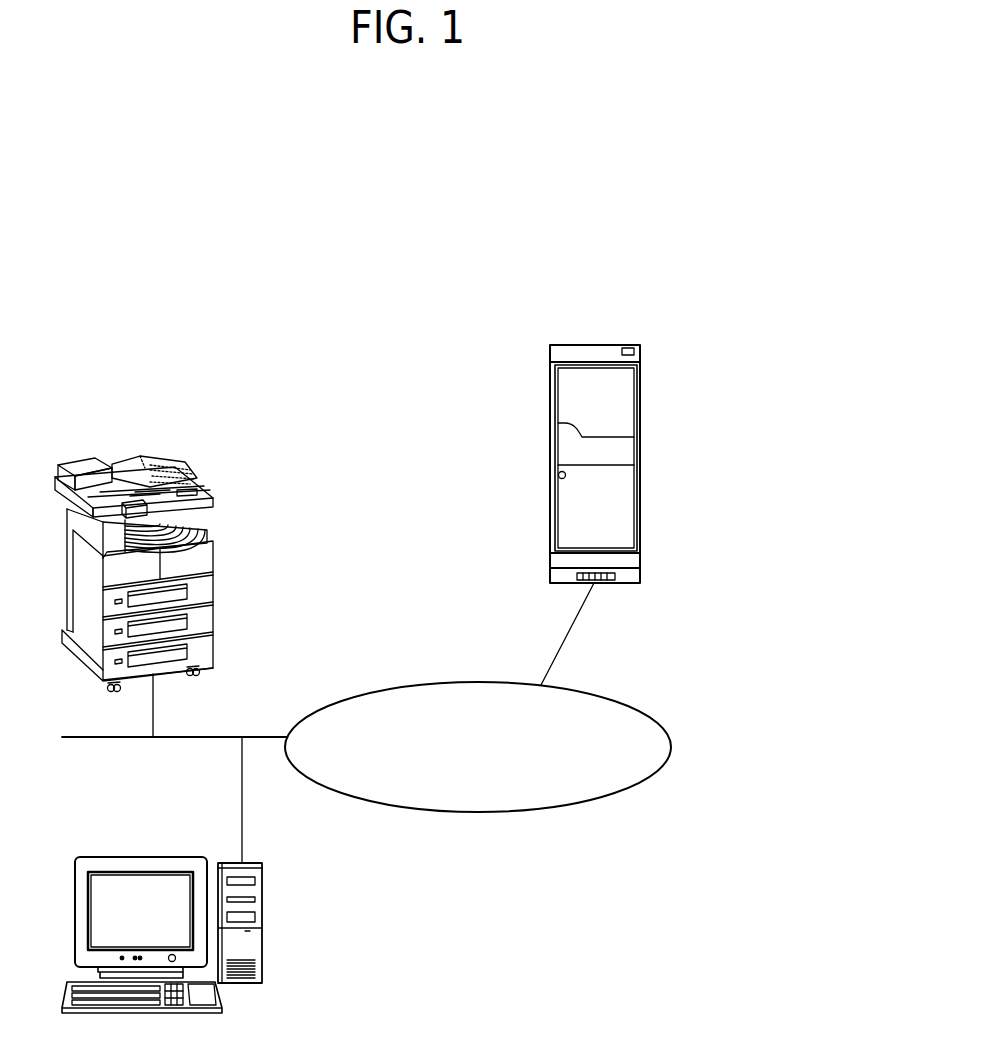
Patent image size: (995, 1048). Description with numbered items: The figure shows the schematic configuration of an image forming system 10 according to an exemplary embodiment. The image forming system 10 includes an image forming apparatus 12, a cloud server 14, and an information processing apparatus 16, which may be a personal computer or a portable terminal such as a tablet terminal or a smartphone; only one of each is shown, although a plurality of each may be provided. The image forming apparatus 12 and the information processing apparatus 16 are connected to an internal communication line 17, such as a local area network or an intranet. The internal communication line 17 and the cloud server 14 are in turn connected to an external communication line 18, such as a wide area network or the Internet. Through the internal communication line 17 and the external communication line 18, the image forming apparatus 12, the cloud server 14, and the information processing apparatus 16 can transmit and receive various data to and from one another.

The image forming system 10 is at (693, 160).
The image forming apparatus 12 is at (75, 469).
The cloud server 14 is at (605, 358).
The information processing apparatus 16 is at (143, 857).
The internal communication line 17 is at (262, 737).
The external communication line 18 is at (664, 731).